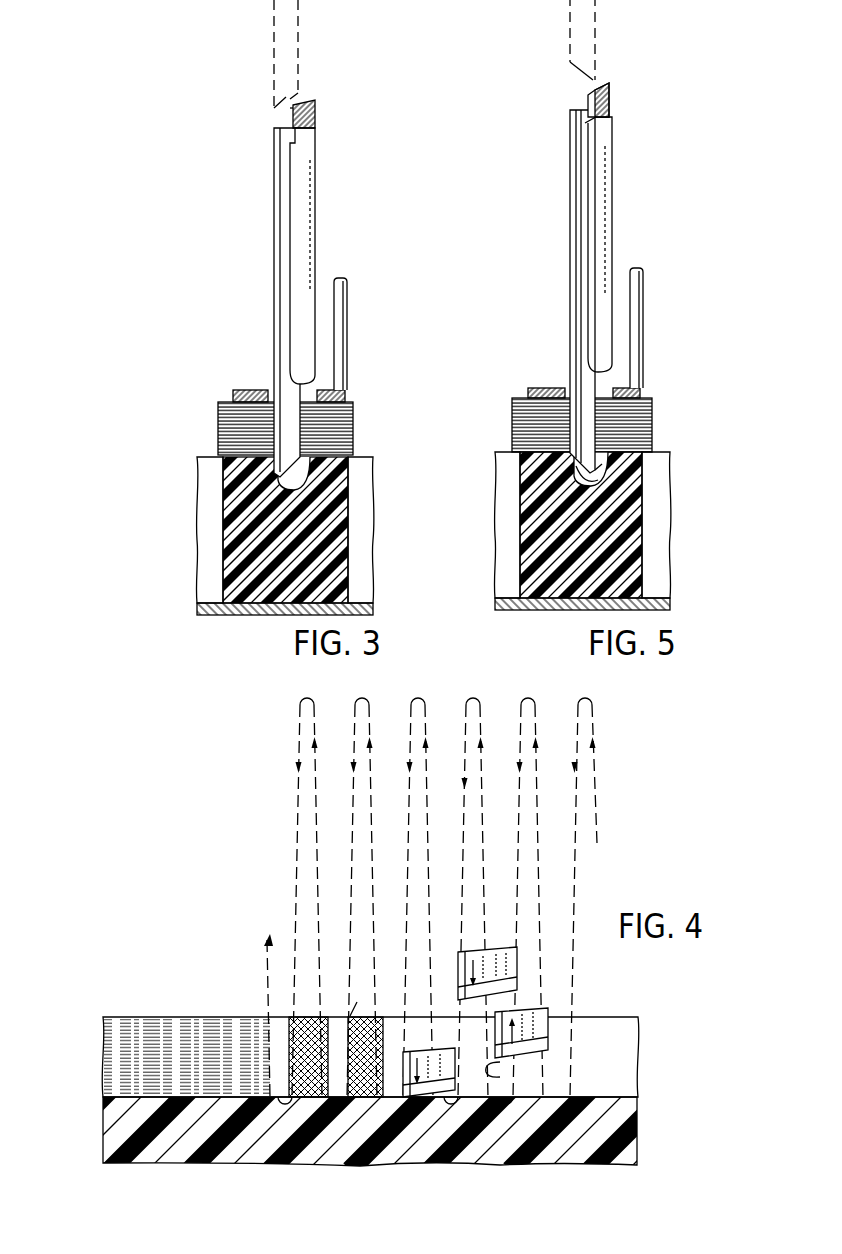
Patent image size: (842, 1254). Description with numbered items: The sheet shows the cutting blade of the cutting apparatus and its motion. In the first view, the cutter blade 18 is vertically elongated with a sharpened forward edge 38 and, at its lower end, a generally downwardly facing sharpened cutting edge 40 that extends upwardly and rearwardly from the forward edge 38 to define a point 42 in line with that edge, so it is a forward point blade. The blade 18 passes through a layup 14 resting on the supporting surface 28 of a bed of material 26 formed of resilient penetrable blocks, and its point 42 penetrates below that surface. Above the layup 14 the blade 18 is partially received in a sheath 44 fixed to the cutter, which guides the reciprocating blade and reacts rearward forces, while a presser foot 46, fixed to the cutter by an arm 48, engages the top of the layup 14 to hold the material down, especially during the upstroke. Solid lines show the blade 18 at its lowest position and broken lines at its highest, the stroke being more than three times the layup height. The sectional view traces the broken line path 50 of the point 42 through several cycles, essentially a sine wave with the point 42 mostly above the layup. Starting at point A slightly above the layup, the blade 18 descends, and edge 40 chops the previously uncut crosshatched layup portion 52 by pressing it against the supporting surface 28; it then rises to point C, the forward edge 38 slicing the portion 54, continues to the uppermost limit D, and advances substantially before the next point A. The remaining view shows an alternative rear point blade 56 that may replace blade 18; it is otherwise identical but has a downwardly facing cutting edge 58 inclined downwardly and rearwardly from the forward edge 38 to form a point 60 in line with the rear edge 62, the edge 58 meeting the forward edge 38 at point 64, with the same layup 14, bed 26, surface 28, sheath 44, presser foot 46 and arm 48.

In FIG. 3, the layup 14 is at (232, 425).
In FIG. 5, the layup 14 is at (561, 420).
In FIG. 3, the cutter blade 18 is at (299, 38).
In FIG. 4, the cutter blade 18 is at (495, 966).
In FIG. 3, the bed of material 26 is at (330, 585).
In FIG. 5, the bed of material 26 is at (597, 526).
In FIG. 4, the bed of material 26 is at (590, 1135).
In FIG. 3, the supporting surface 28 is at (213, 462).
In FIG. 5, the supporting surface 28 is at (572, 510).
In FIG. 4, the supporting surface 28 is at (605, 1097).
In FIG. 3, the forward edge 38 is at (276, 345).
In FIG. 5, the forward edge 38 is at (557, 291).
In FIG. 4, the forward edge 38 is at (460, 967).
In FIG. 3, the cutting edge 40 is at (300, 93).
In FIG. 4, the cutting edge 40 is at (545, 1050).
In FIG. 3, the point 42 is at (266, 500).
In FIG. 4, the point 42 is at (500, 1076).
In FIG. 3, the sheath 44 is at (305, 177).
In FIG. 5, the sheath 44 is at (624, 244).
In FIG. 3, the presser foot 46 is at (240, 390).
In FIG. 5, the presser foot 46 is at (565, 375).
In FIG. 3, the arm 48 is at (348, 328).
In FIG. 5, the arm 48 is at (658, 328).
In FIG. 4, the path 50 is at (597, 812).
In FIG. 4, the previously uncut layup portion 52 is at (372, 1097).
In FIG. 4, the layup portion cut by slicing action 54 is at (330, 1105).
In FIG. 5, the rear point blade 56 is at (640, 218).
In FIG. 5, the cutting edge 58 is at (527, 494).
In FIG. 5, the point 60 is at (650, 479).
In FIG. 5, the rear edge 62 is at (606, 425).
In FIG. 5, the intersection point 64 is at (531, 473).
In FIG. 4, the point A is at (402, 998).
In FIG. 4, the point C is at (400, 1017).
In FIG. 4, the point D is at (472, 700).